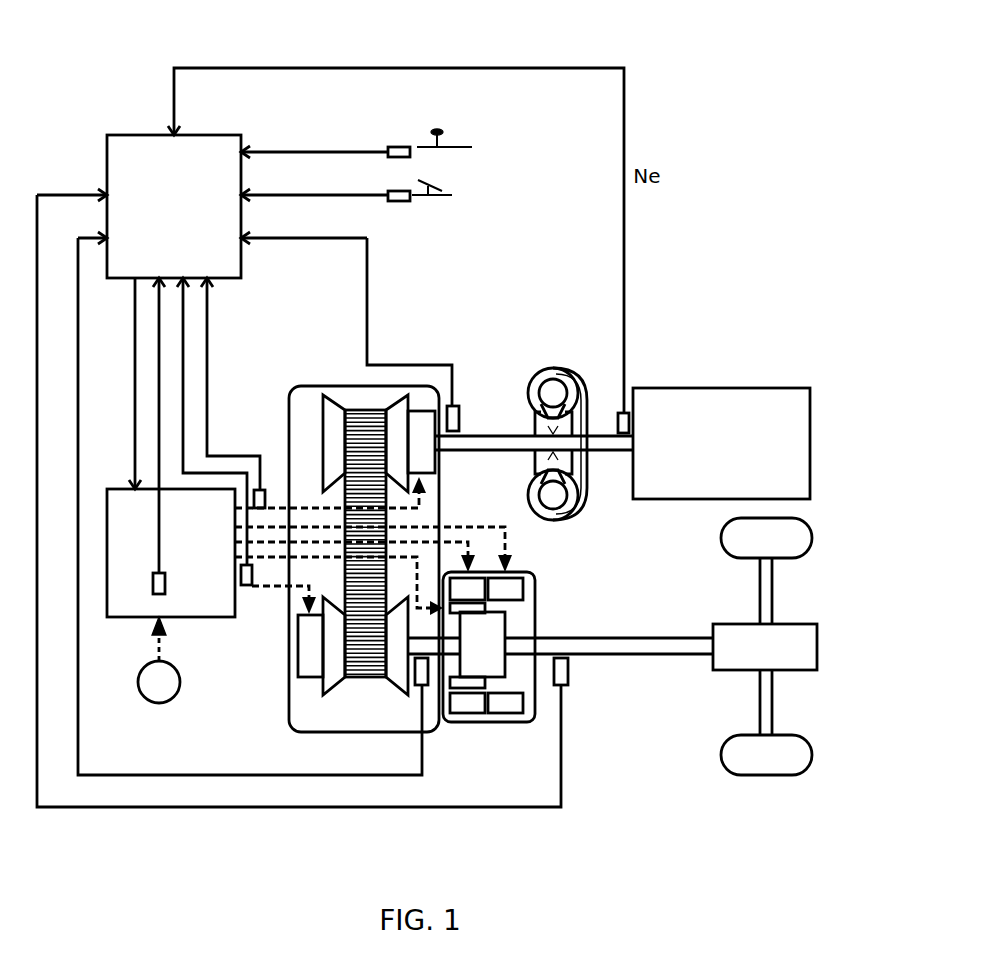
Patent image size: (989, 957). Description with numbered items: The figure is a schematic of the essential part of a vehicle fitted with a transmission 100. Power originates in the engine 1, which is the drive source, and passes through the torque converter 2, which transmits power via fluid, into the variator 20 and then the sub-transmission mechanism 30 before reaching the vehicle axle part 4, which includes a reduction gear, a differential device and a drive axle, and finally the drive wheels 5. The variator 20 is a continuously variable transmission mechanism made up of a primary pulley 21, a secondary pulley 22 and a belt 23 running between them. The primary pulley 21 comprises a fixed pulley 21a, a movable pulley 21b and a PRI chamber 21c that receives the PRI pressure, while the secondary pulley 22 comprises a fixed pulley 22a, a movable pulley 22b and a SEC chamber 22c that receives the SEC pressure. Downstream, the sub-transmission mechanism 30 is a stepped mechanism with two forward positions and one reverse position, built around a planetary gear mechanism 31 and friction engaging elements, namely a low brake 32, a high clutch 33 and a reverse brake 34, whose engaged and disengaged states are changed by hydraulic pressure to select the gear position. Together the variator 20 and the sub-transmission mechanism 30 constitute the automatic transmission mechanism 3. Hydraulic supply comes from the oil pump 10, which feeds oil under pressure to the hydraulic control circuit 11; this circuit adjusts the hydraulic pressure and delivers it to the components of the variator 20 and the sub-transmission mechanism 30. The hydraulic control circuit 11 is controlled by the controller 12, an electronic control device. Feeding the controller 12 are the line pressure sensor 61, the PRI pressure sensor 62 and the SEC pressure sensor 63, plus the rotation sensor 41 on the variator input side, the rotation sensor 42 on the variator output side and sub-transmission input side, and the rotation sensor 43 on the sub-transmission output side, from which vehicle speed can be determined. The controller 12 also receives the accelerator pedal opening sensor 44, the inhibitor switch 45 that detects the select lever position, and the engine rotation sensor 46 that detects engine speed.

The transmission 100 is at (88, 88).
The engine 1 is at (795, 398).
The torque converter 2 is at (583, 383).
The automatic transmission mechanism 3 is at (312, 386).
The vehicle axle part 4 is at (822, 650).
The drive wheels 5 is at (812, 540).
The oil pump 10 is at (140, 697).
The hydraulic control circuit 11 is at (125, 487).
The controller 12 is at (208, 135).
The variator 20 is at (363, 542).
The primary pulley 21 is at (370, 404).
The fixed pulley 21a is at (337, 432).
The movable pulley 21b is at (412, 452).
The PRI chamber 21c is at (418, 425).
The secondary pulley 22 is at (321, 685).
The fixed pulley 22a is at (396, 665).
The movable pulley 22b is at (338, 665).
The SEC chamber 22c is at (303, 665).
The belt 23 is at (366, 678).
The sub-transmission mechanism 30 is at (523, 652).
The planetary gear mechanism 31 is at (490, 630).
The low brake 32 is at (470, 588).
The high clutch 33 is at (470, 688).
The reverse brake 34 is at (505, 588).
The rotation sensor 41 is at (452, 406).
The rotation sensor 42 is at (425, 685).
The rotation sensor 43 is at (568, 670).
The accelerator pedal opening sensor 44 is at (398, 201).
The inhibitor switch 45 is at (399, 147).
The engine rotation sensor 46 is at (617, 418).
The line pressure sensor 61 is at (157, 595).
The PRI pressure sensor 62 is at (259, 490).
The SEC pressure sensor 63 is at (247, 587).